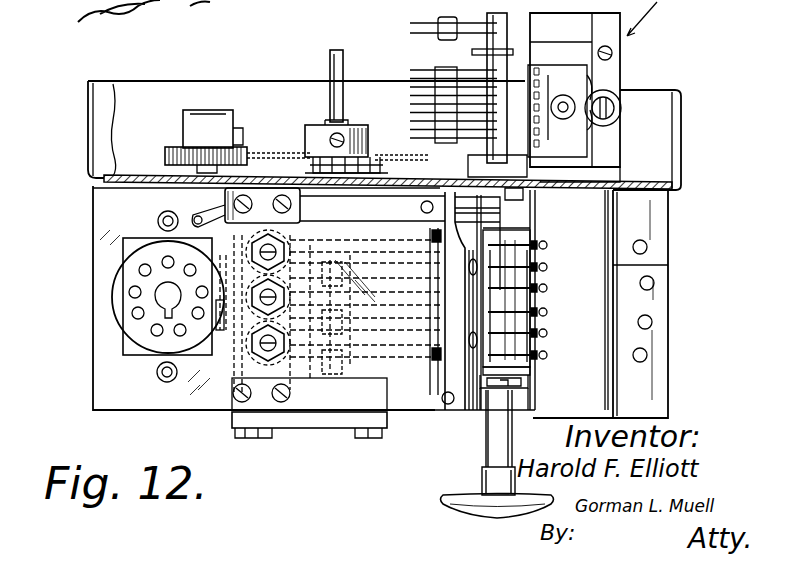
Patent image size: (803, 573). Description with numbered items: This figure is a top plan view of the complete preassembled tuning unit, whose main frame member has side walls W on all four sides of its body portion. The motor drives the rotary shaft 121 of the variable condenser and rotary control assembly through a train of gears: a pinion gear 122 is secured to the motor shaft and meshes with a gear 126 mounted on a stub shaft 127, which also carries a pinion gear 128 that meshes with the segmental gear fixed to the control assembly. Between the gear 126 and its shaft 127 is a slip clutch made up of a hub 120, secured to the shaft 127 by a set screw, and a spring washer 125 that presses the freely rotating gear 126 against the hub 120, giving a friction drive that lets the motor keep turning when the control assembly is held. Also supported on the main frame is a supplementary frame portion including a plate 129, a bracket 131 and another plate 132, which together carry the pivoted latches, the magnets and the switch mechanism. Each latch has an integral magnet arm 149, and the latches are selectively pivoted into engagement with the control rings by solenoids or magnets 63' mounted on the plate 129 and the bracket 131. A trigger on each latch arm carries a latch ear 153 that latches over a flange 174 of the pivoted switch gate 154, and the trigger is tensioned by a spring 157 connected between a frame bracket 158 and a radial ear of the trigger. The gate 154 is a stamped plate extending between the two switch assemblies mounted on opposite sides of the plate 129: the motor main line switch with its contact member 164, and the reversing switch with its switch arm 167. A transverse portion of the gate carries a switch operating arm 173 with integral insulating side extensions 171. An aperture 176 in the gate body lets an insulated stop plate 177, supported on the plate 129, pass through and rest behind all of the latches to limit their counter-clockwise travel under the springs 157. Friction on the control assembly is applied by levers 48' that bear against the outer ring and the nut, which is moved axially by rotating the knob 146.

The side walls W is at (84, 132).
The pinion gear 122 is at (168, 155).
The gear 126 is at (274, 142).
The stub shaft 127 is at (345, 54).
The hub 120 is at (351, 127).
The spring washer 125 is at (366, 153).
The rotary shaft 121 is at (497, 68).
The pinion gear 128 is at (190, 184).
The plate 129 is at (107, 392).
The solenoids or magnets 63' is at (291, 320).
The bracket 131 is at (237, 348).
The magnet arm 149 is at (336, 383).
The plate 132 is at (347, 424).
The insulated stop plate 177 is at (427, 358).
The aperture 176 is at (471, 320).
The switch operating arm 173 is at (456, 388).
The side extensions 171 is at (487, 214).
The contact member 164 is at (505, 218).
The spring 157 is at (537, 312).
The latch ear 153 is at (537, 356).
The flange 174 is at (492, 364).
The levers 48' is at (568, 379).
The switch gate 154 is at (488, 403).
The frame bracket 158 is at (668, 265).
The switch arm 167 is at (497, 402).
The knob 146 is at (458, 504).